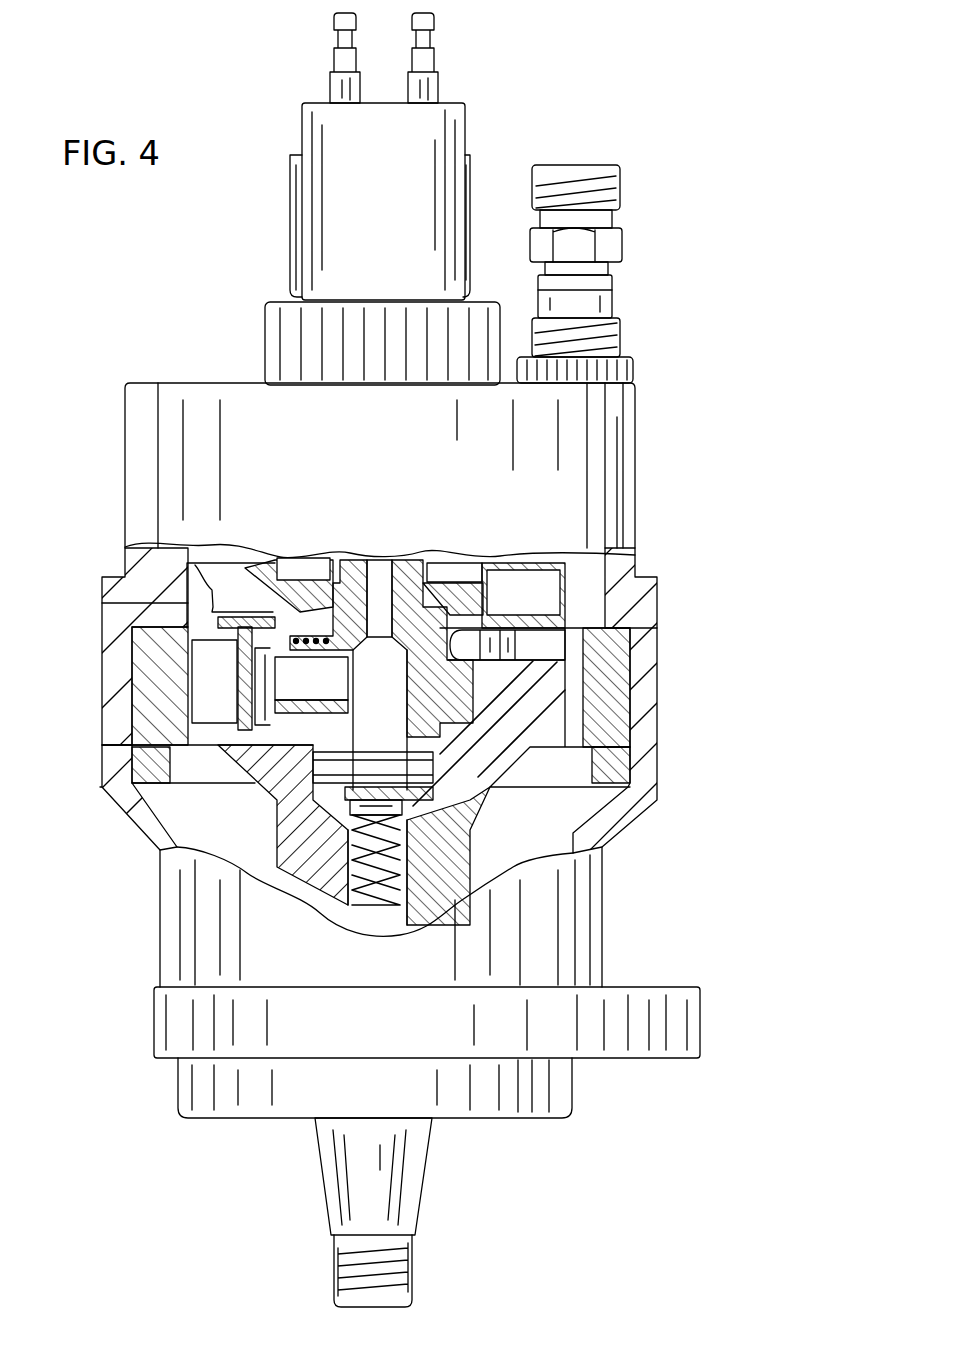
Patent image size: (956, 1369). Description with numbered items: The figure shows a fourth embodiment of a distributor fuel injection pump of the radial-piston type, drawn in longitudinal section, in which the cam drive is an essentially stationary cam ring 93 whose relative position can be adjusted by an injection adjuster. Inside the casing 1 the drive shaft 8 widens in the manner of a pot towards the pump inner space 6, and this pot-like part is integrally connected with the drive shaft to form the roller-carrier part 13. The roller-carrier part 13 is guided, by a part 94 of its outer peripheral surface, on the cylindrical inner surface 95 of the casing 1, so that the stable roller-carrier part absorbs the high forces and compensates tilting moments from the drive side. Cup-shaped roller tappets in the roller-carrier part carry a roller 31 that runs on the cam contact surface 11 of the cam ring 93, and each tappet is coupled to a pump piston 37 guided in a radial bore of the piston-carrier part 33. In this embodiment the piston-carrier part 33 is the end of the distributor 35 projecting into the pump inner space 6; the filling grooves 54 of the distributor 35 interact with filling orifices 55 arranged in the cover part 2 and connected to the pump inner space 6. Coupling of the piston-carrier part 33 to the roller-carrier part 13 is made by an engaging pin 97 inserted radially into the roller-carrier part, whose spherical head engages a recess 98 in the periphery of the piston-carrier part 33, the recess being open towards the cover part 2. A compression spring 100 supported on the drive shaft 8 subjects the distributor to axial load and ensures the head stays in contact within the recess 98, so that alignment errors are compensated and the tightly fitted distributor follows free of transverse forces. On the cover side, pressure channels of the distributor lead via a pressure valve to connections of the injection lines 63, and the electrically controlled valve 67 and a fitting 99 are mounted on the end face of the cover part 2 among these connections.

The electrical plug connector 67 is at (437, 145).
The pressure valve / injection line 63 is at (612, 328).
The cover part 2 is at (630, 412).
The casing 1 is at (638, 557).
The cam contact surface 11 is at (580, 717).
The cylindrical inner surface 95 is at (190, 608).
The cam ring 93 is at (150, 683).
The roller 31 is at (214, 681).
The pump piston 37 is at (311, 678).
The part of outer peripheral surface 94 is at (200, 565).
The filling orifice 55 is at (295, 563).
The filling groove 54 is at (343, 562).
The distributor 35 is at (400, 560).
The piston-carrier part 33 is at (583, 680).
The recess 98 is at (465, 580).
The piston 99 is at (510, 590).
The engaging pin 97 is at (550, 644).
The roller-carrier part 13 is at (180, 805).
The pump inner space 6 is at (260, 757).
The drive shaft 8 is at (440, 915).
The compression spring 100 is at (320, 917).